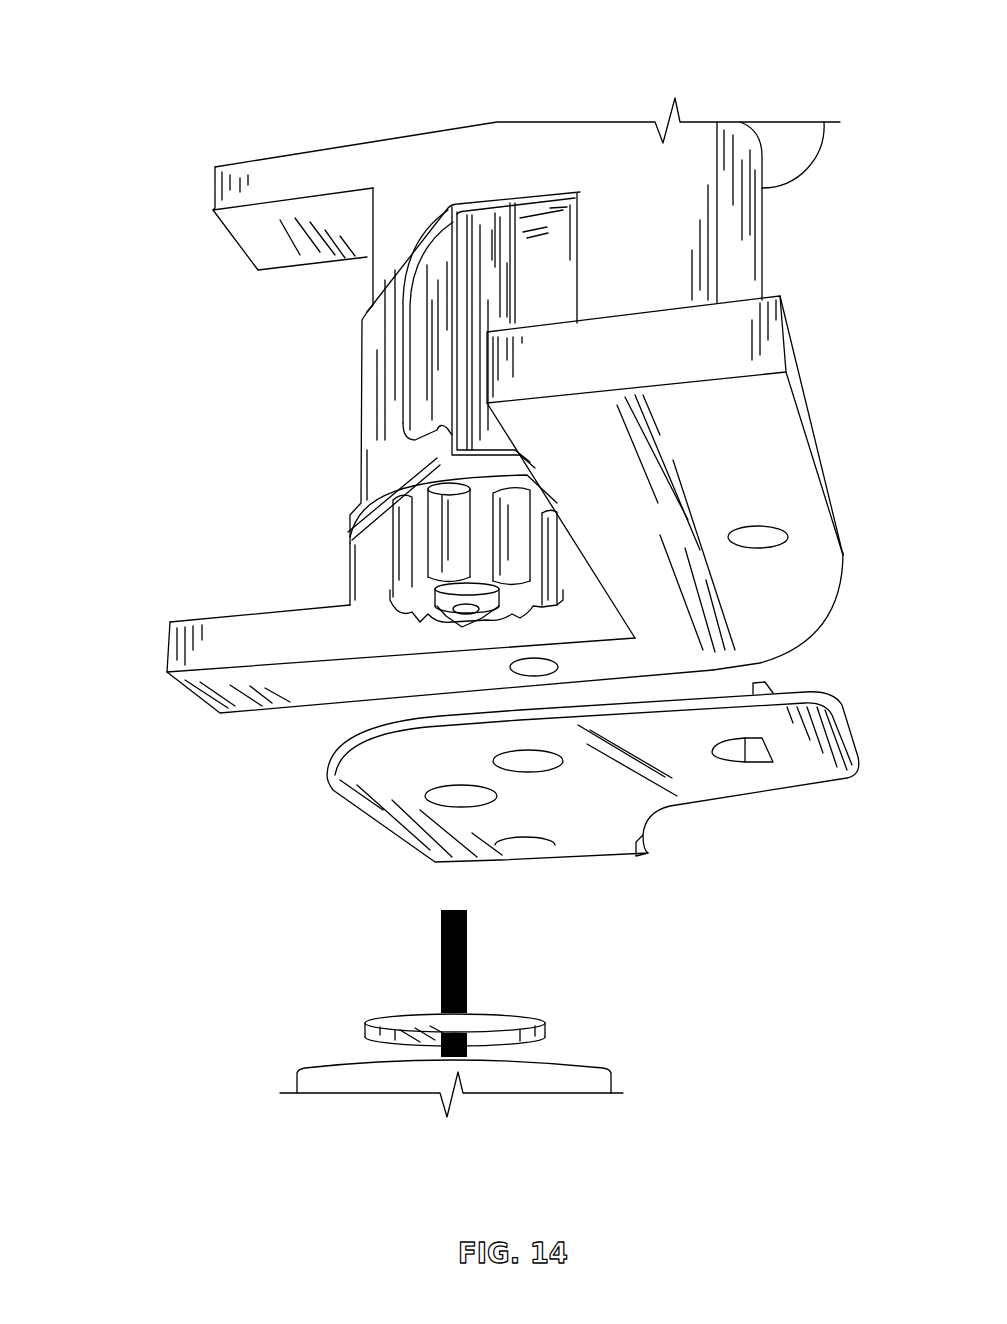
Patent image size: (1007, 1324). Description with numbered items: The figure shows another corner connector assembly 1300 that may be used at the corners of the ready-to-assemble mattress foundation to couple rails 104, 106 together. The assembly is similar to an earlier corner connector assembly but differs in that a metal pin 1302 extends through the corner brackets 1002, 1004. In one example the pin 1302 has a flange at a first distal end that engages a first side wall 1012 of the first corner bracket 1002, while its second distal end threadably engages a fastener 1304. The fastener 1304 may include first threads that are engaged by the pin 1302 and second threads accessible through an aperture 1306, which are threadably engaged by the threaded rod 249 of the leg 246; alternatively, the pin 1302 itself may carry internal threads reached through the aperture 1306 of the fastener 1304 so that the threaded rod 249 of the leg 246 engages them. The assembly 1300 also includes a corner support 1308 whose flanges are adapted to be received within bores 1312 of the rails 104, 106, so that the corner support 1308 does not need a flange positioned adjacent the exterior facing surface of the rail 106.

The corner connector assembly 1300 is at (146, 48).
The first side wall 1012 is at (512, 197).
The corner bracket 1004 is at (553, 215).
The pin 1302 is at (493, 277).
The first corner bracket 1002 is at (370, 388).
The rail 106 is at (777, 435).
The bore 1312 is at (767, 535).
The rail 104 is at (180, 645).
The fastener 1304 is at (397, 552).
The aperture 1306 is at (457, 620).
The corner support 1308 is at (380, 790).
The threaded rod 249 is at (438, 945).
The leg 246 is at (330, 1070).